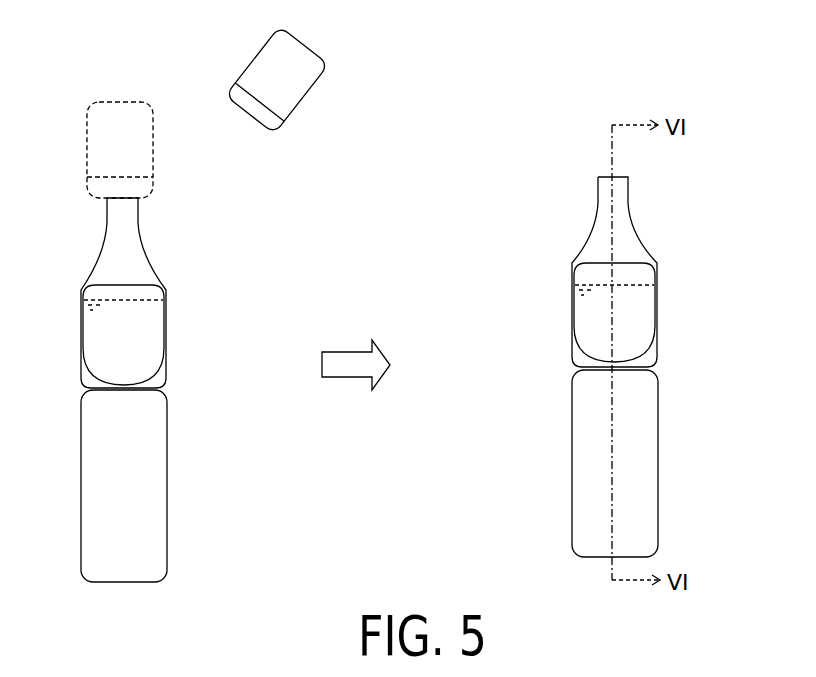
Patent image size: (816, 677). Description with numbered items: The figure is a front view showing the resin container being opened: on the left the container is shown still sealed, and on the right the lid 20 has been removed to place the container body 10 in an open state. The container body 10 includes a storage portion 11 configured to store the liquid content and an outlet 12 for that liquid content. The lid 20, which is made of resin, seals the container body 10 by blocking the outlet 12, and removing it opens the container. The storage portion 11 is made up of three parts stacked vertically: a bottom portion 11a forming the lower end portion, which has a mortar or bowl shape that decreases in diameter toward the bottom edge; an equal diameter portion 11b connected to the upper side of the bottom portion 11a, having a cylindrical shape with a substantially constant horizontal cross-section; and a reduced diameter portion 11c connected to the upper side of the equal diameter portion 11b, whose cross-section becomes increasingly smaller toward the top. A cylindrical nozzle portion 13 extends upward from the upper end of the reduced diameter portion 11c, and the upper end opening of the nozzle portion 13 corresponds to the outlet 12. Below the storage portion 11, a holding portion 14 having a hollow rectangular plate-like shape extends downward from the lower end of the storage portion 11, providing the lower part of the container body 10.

The container body 10 is at (92, 253).
The lid 20 is at (246, 50).
The storage portion 11 is at (645, 308).
The bottom portion 11a is at (556, 338).
The equal diameter portion 11b is at (556, 263).
The reduced diameter portion 11c is at (556, 213).
The outlet 12 is at (604, 176).
The nozzle portion 13 is at (619, 195).
The holding portion 14 is at (647, 443).